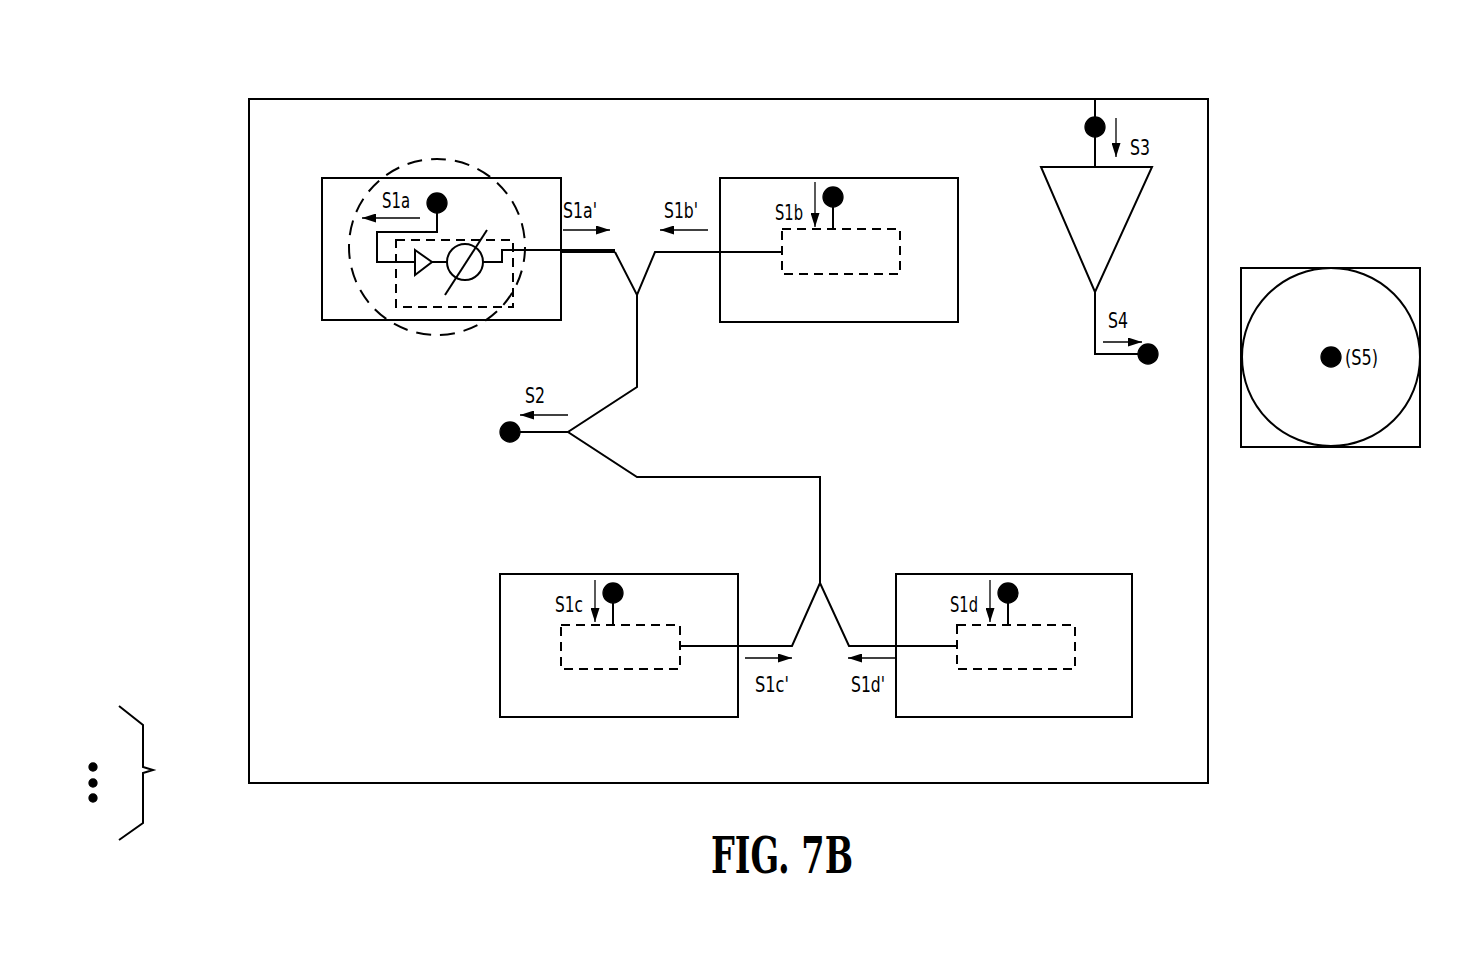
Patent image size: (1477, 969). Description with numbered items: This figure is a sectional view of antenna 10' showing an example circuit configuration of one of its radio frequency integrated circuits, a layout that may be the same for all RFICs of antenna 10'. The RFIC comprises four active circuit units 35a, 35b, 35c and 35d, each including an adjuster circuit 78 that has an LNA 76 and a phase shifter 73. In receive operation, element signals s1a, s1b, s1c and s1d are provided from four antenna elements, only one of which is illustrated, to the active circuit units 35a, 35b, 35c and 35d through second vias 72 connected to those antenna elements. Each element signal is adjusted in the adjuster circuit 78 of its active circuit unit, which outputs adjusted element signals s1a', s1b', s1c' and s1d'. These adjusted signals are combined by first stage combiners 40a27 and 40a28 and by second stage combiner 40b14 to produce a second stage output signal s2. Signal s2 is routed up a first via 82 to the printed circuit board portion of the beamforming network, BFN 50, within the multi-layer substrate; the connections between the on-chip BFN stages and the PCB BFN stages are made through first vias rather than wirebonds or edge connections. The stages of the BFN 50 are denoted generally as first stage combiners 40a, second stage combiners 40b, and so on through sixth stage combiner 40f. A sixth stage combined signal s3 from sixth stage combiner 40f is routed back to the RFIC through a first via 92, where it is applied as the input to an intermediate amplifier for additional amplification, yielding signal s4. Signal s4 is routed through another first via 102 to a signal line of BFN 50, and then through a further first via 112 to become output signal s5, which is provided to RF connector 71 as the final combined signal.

The antenna 10' is at (758, 418).
The active circuit unit 35a is at (335, 178).
The active circuit unit 35b is at (737, 178).
The active circuit unit 35c is at (583, 717).
The active circuit unit 35d is at (985, 717).
The second via 72 is at (441, 194).
The phase shifter 73 is at (466, 282).
The LNA 76 is at (422, 277).
The adjuster circuit 78 is at (396, 285).
The first stage combiner 40a27 is at (647, 280).
The second stage combiner 40b14 is at (618, 402).
The first stage combiner 40a28 is at (826, 590).
The first via 82 is at (508, 442).
The first via 92 is at (1085, 127).
The first via 102 is at (1145, 365).
The RF connector 71 is at (1420, 357).
The first via 112 is at (1323, 351).
The first stage combiner 40a is at (96, 717).
The second stage combiner 40b is at (96, 743).
The sixth stage combiner 40f is at (94, 823).
The BFN 50 is at (147, 773).